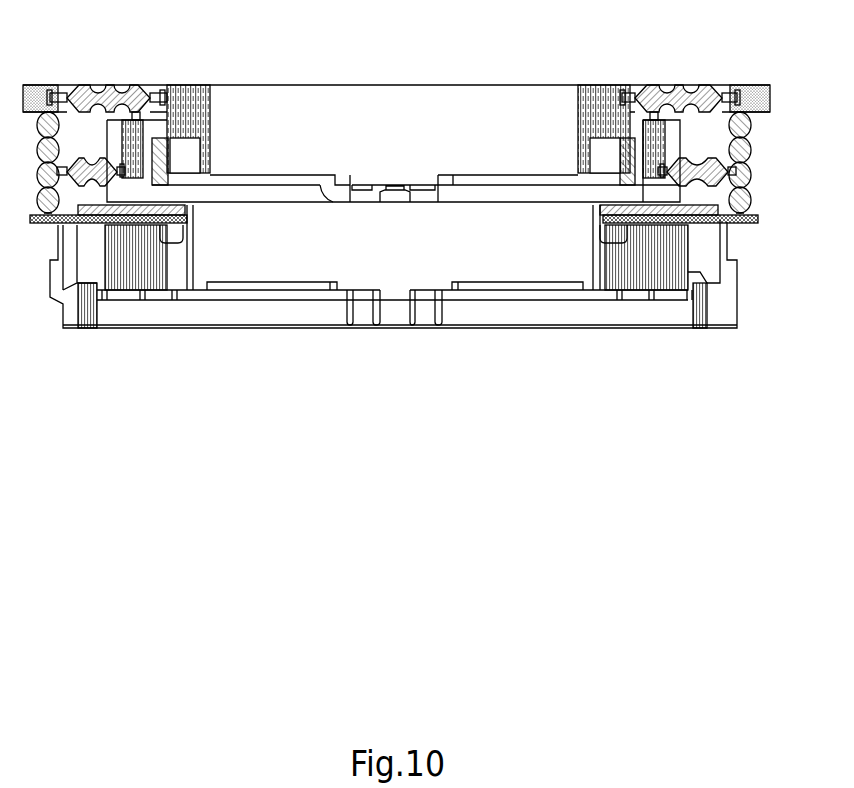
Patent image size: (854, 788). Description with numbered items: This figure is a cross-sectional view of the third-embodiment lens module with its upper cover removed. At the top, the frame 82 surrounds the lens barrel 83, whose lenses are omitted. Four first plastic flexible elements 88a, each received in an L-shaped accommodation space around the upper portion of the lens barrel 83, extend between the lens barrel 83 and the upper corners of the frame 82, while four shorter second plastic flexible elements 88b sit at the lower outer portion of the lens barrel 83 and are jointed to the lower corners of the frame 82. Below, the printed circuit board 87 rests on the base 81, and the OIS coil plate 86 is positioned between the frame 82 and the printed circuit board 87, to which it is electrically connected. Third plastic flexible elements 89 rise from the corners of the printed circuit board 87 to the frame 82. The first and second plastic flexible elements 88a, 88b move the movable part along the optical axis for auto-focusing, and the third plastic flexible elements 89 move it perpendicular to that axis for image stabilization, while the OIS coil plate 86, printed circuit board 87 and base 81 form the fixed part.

The base 81 is at (543, 313).
The frame 82 is at (758, 97).
The lens barrel 83 is at (596, 90).
The OIS coil plate 86 is at (658, 212).
The printed circuit board 87 is at (760, 220).
The first plastic flexible element 88a is at (700, 100).
The second plastic flexible element 88b is at (712, 160).
The third plastic flexible element 89 is at (752, 177).